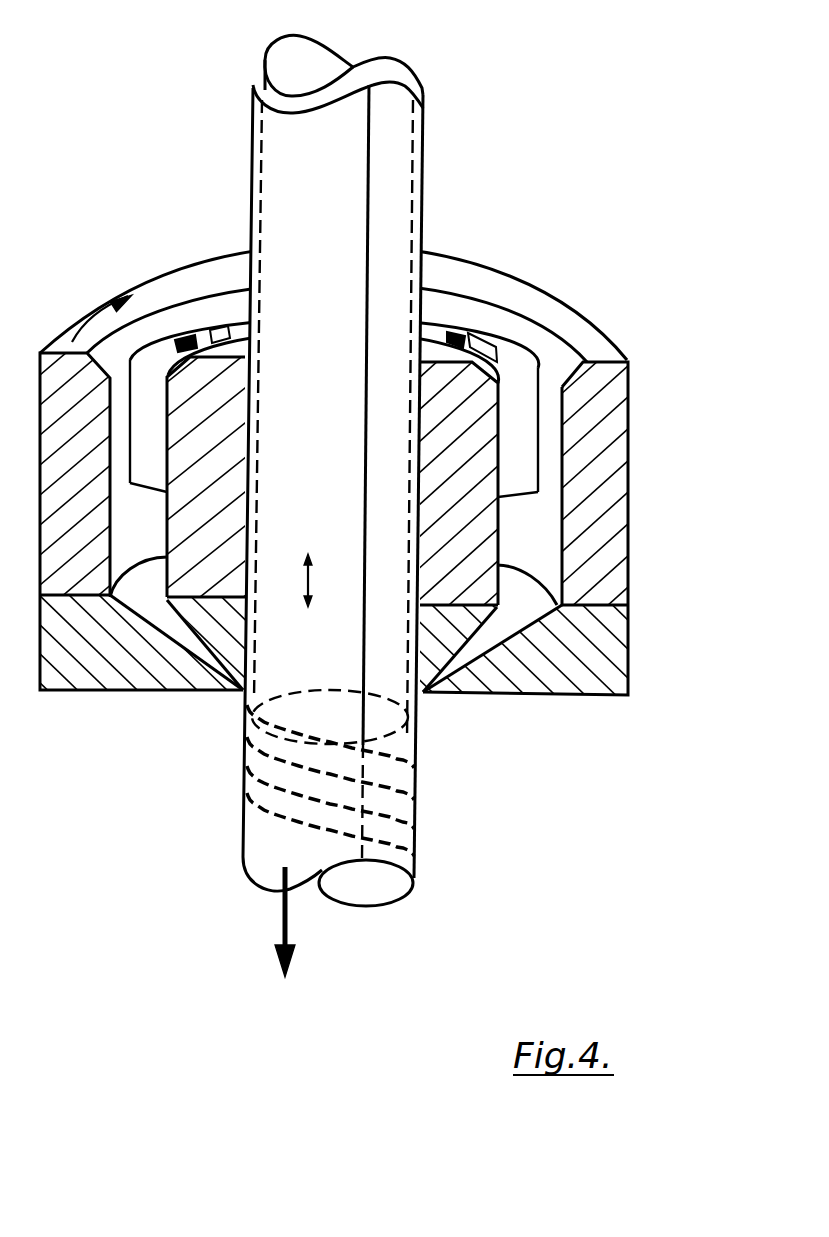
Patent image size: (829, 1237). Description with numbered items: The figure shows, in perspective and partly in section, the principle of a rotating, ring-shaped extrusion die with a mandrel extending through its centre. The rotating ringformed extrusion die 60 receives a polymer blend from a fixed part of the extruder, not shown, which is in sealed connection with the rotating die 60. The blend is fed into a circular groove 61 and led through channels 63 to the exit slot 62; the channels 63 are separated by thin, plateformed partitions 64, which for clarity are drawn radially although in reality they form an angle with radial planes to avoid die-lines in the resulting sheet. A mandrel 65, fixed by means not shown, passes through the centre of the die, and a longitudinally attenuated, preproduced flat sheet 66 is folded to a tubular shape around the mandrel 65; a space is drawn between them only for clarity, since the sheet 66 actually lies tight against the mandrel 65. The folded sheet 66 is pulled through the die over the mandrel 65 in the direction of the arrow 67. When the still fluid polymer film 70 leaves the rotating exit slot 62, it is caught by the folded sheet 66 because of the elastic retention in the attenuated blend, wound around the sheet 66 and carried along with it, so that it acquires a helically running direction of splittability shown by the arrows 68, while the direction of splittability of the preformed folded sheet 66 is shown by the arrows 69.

The rotating ringformed extrusion die 60 is at (414, 618).
The circular groove 61 is at (532, 345).
The exit slot 62 is at (575, 665).
The channels 63 is at (453, 320).
The plateformed partitions 64 is at (517, 430).
The mandrel 65 is at (292, 56).
The folded flat sheet 66 is at (308, 155).
The arrow 67 is at (283, 921).
The arrows 68 is at (247, 772).
The arrows 69 is at (310, 582).
The polymer film 70 is at (167, 641).